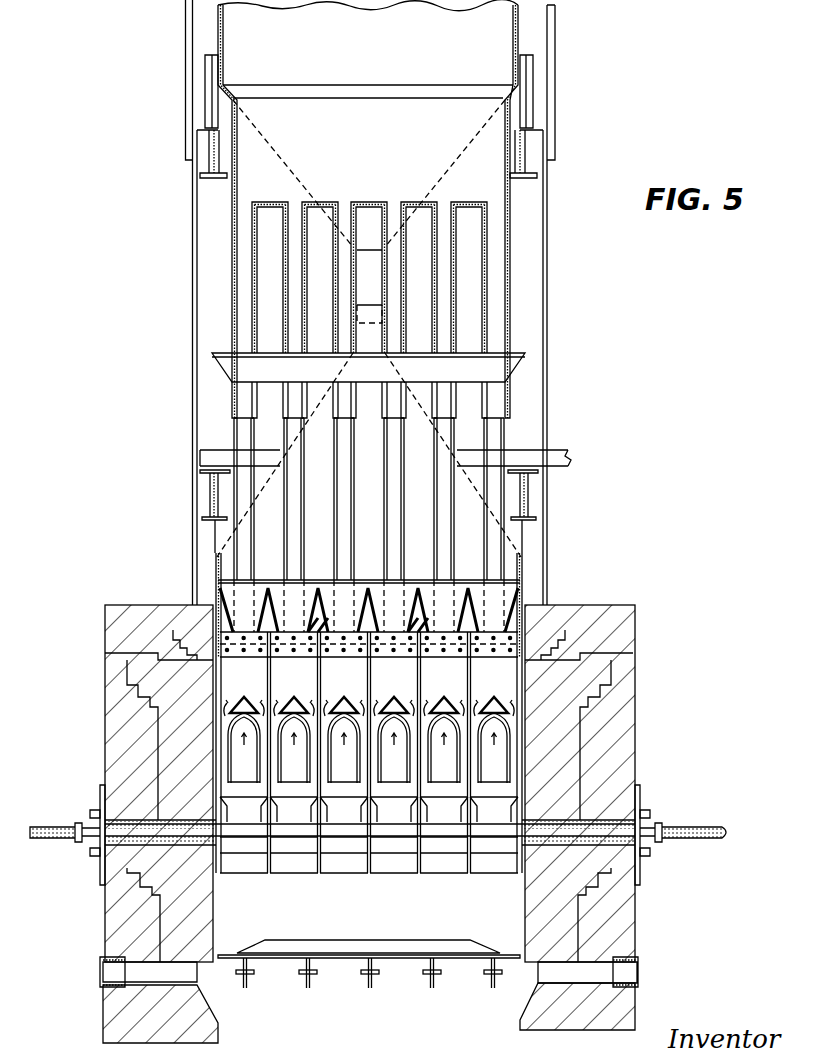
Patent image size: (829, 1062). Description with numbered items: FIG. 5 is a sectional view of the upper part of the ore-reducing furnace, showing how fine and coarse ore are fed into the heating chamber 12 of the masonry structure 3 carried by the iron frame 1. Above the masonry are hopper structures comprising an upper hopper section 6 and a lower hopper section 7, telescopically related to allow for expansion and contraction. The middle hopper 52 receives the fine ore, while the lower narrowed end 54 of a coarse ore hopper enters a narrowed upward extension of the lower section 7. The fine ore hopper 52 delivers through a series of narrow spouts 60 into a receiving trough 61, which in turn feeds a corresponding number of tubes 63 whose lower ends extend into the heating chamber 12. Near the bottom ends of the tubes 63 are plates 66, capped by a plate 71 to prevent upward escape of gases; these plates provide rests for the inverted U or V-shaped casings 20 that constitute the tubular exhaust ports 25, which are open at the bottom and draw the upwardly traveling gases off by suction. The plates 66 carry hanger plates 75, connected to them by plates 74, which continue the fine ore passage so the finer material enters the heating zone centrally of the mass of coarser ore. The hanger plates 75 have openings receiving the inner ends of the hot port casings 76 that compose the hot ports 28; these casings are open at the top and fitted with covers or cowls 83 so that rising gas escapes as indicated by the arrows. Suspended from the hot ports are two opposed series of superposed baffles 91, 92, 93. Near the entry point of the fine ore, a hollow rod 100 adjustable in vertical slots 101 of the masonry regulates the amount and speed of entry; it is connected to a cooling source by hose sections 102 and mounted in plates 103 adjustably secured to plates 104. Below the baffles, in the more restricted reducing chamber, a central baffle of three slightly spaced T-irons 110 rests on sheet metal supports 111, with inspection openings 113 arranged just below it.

The iron frame 1 is at (547, 317).
The masonry structure 3 is at (627, 928).
The upper hopper section 6 is at (538, 35).
The lower hopper section 7 is at (519, 533).
The heating chamber 12 is at (530, 678).
The inverted U or V-shaped casings 20 is at (366, 585).
The tubular exhaust ports 25 is at (370, 617).
The hot ports 28 is at (295, 768).
The middle hopper 52 is at (240, 30).
The lower narrowed hopper end 54 is at (368, 291).
The narrow spouts 60 is at (293, 270).
The receiving trough 61 is at (508, 366).
The tubes 63 is at (493, 433).
The plates 66 is at (547, 574).
The capping plate 71 is at (314, 580).
The connecting plates 74 is at (247, 653).
The hanger plates 75 is at (369, 724).
The hot port casings 76 is at (227, 742).
The covers or cowls 83 is at (328, 700).
The baffle 91 is at (302, 862).
The baffle 92 is at (242, 843).
The baffle 93 is at (344, 810).
The hollow rod 100 is at (397, 837).
The vertical slots 101 is at (125, 820).
The hose sections 102 is at (700, 828).
The rod mounting plates 103 is at (97, 858).
The support plates 104 is at (100, 879).
The T-irons 110 is at (337, 938).
The sheet metal supports 111 is at (308, 988).
The inspection openings 113 is at (133, 965).